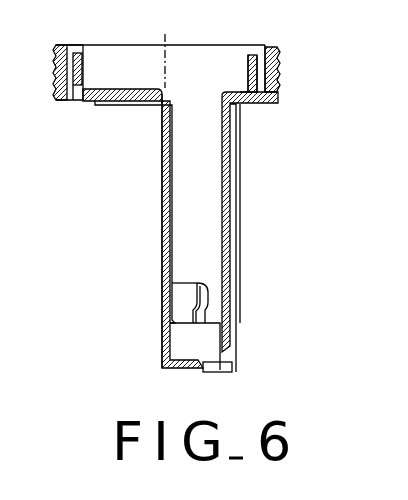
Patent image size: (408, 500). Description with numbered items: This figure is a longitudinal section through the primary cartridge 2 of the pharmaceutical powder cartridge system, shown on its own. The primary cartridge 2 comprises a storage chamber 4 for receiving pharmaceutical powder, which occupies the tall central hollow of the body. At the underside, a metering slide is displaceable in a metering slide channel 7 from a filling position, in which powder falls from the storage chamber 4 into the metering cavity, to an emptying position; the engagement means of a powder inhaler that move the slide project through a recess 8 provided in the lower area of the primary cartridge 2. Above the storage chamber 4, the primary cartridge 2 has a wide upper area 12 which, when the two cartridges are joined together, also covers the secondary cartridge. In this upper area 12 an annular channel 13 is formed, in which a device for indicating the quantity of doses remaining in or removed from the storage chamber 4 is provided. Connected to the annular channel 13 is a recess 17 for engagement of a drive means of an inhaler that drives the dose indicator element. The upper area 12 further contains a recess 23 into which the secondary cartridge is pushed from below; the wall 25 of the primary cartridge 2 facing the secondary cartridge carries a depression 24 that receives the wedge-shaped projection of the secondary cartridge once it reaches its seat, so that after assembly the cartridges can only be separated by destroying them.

The primary cartridge 2 is at (162, 228).
The storage chamber 4 is at (203, 203).
The metering slide channel 7 is at (205, 338).
The recess 8 is at (232, 368).
The upper area 12 is at (278, 91).
The annular channel 13 is at (276, 61).
The recess 17 is at (68, 99).
The recess 23 is at (128, 103).
The depression 24 is at (162, 190).
The wall 25 is at (162, 243).